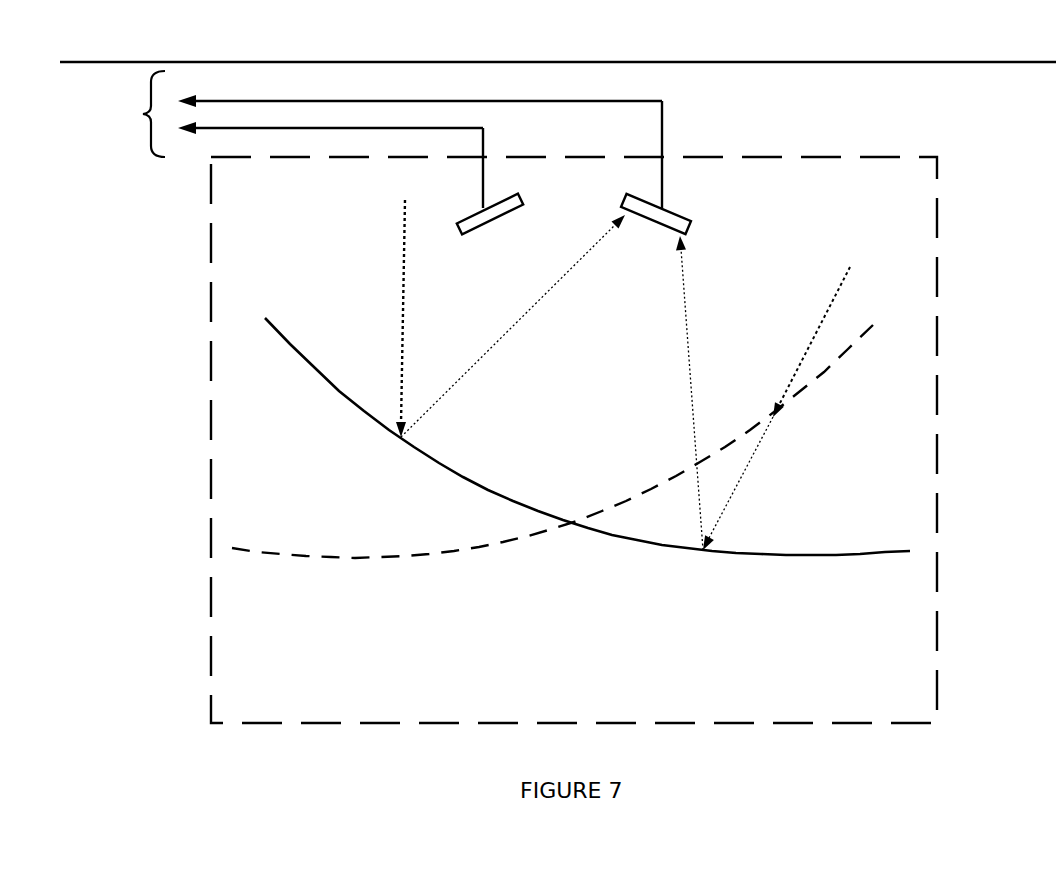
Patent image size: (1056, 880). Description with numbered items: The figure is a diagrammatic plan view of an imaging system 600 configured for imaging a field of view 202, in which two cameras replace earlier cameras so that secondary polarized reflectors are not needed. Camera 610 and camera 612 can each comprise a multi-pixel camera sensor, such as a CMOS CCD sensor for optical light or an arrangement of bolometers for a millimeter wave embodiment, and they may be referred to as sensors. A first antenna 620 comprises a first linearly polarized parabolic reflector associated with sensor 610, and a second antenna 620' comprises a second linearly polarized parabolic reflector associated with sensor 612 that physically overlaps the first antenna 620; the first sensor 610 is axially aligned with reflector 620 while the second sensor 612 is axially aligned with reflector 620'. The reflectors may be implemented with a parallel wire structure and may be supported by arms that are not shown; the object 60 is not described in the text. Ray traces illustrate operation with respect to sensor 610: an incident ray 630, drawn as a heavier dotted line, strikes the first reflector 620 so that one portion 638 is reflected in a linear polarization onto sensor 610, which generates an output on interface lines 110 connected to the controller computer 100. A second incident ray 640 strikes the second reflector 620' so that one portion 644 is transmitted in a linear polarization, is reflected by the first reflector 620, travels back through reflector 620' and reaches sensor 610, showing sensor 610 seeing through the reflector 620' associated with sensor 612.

The field of view 202 is at (148, 60).
The controller computer 100 is at (97, 116).
The interface lines 110 is at (483, 136).
The imaging system 600 is at (962, 150).
The camera 612 is at (455, 224).
The camera 610 is at (628, 210).
The object 60 is at (582, 411).
The first antenna 620 is at (582, 411).
The second antenna 620' is at (552, 441).
The incident ray 630 is at (405, 298).
The reflected portion 638 is at (470, 371).
The incident ray 640 is at (805, 352).
The transmitted portion 644 is at (695, 446).